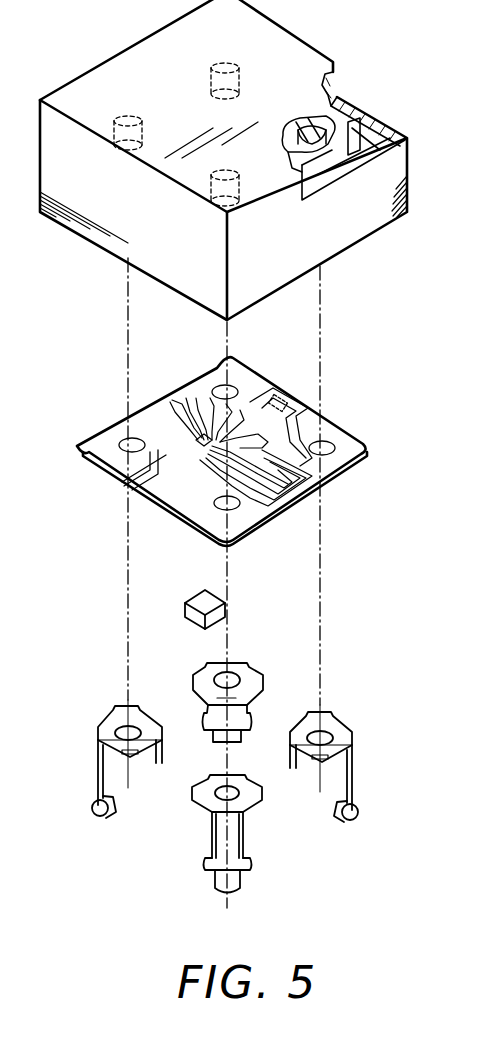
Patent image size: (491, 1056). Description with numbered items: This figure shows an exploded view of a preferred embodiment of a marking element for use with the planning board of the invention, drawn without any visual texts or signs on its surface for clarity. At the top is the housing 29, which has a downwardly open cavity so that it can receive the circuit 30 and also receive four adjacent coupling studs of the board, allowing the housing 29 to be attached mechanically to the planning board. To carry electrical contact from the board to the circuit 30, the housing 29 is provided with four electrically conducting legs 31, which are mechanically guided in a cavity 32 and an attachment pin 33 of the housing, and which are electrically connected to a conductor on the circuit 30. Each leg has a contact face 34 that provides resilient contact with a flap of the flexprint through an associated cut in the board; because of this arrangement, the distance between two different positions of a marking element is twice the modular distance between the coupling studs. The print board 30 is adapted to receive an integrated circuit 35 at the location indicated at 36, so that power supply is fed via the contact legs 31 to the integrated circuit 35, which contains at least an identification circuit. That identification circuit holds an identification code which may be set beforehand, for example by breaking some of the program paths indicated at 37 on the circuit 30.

The housing 29 is at (290, 55).
The cavity 32 is at (388, 122).
The attachment pin 33 is at (332, 176).
The circuit 30 is at (322, 470).
The location 36 is at (165, 440).
The program paths 37 is at (230, 436).
The integrated circuit 35 is at (218, 622).
The electrically conducting legs 31 is at (254, 706).
The contact face 34 is at (334, 814).